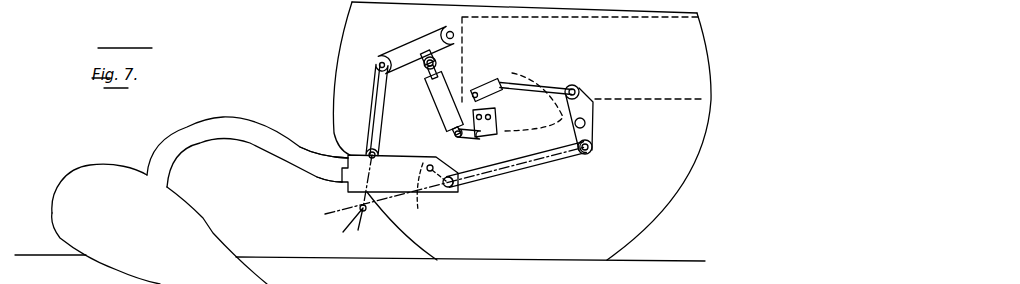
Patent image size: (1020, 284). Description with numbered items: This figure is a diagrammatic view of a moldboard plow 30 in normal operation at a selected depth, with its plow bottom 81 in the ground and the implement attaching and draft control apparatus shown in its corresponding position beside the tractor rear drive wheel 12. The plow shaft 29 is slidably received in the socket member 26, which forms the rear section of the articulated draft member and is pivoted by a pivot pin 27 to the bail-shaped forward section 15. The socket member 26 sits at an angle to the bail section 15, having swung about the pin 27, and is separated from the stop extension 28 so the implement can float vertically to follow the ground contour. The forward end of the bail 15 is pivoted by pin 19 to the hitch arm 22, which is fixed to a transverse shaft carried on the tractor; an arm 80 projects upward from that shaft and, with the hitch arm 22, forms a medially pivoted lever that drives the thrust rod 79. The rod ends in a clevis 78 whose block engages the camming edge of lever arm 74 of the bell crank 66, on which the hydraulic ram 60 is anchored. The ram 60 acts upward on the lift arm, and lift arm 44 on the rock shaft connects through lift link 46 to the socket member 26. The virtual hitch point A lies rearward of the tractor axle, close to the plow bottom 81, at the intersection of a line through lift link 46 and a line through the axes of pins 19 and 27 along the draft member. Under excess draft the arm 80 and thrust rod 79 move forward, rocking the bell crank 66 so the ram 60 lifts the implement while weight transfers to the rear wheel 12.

The rear drive wheel 12 is at (675, 177).
The forward section 15 is at (553, 161).
The pin 19 is at (585, 155).
The hitch arm 22 is at (592, 133).
The socket member 26 is at (406, 161).
The pivot pin 27 is at (453, 187).
The extension 28 is at (420, 196).
The shaft 29 is at (327, 163).
The moldboard plow 30 is at (139, 146).
The lift arm 44 is at (420, 47).
The lift link 46 is at (374, 106).
The hydraulic ram 60 is at (438, 103).
The bell crank 66 is at (505, 135).
The lever arm 74 is at (485, 82).
The clevis 78 is at (475, 91).
The thrust rod 79 is at (548, 84).
The arm 80 is at (578, 91).
The plow bottom 81 is at (78, 173).
The virtual hitch point A is at (352, 228).